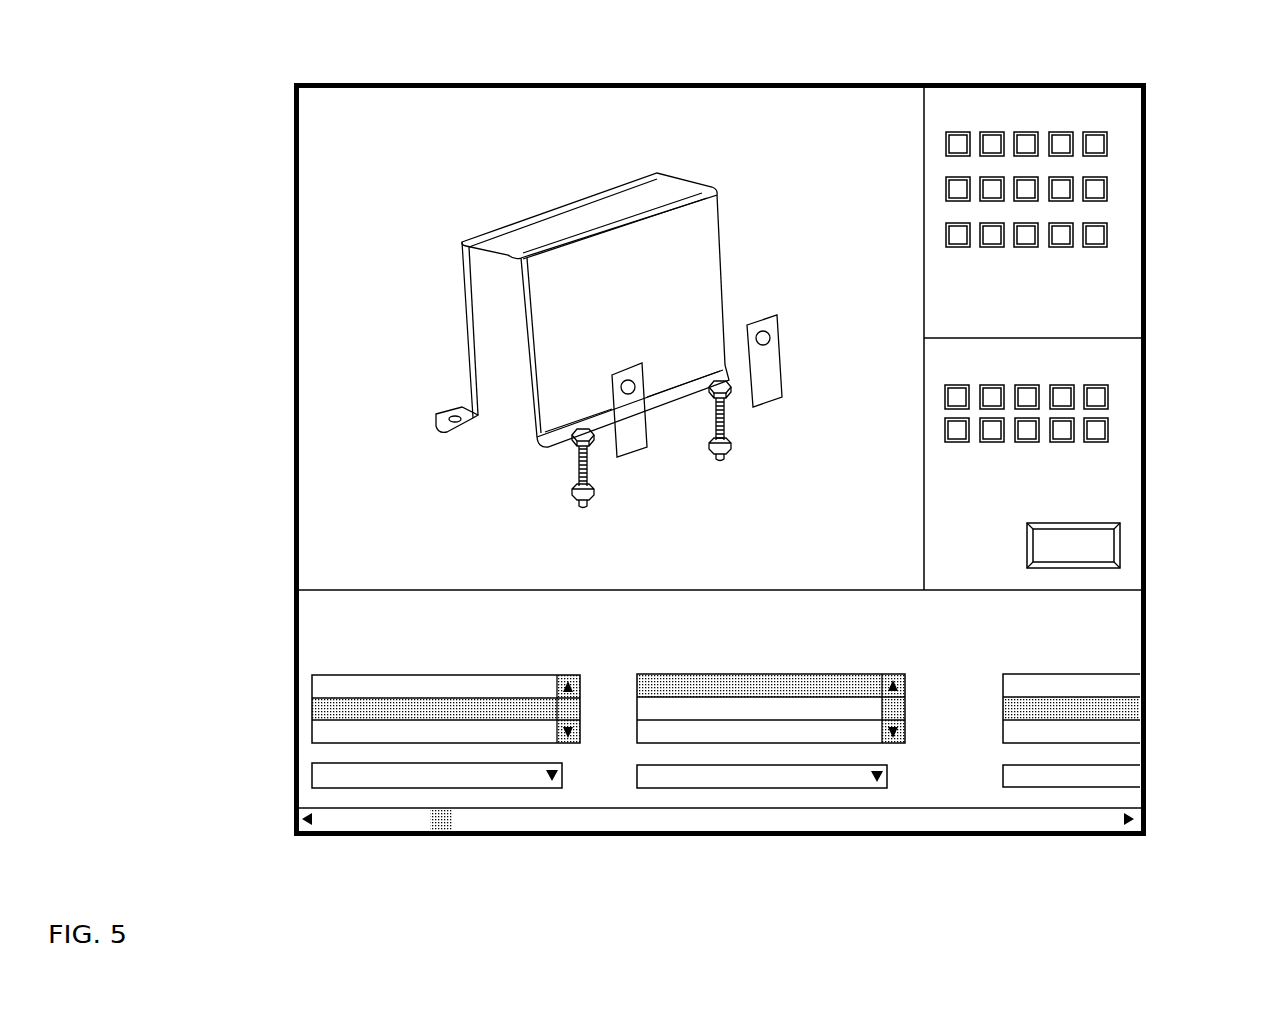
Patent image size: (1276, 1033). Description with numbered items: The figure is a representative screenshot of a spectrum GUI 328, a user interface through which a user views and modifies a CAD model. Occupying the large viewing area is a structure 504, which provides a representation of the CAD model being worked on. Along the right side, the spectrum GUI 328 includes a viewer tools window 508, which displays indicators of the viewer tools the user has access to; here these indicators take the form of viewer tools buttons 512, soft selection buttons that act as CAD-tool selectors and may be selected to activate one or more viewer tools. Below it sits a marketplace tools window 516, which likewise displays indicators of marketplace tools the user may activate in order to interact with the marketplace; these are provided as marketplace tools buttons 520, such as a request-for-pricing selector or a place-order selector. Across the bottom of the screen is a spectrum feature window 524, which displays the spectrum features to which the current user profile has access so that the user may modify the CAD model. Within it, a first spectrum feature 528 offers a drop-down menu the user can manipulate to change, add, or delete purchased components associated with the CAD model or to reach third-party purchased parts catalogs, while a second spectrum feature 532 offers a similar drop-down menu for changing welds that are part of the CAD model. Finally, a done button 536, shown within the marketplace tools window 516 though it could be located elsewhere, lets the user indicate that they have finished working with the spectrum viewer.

The spectrum GUI 328 is at (291, 70).
The structure 504 is at (535, 217).
The viewer tools window 508 is at (1132, 125).
The viewer tools buttons 512 is at (1121, 189).
The marketplace tools window 516 is at (1132, 373).
The marketplace tools buttons 520 is at (1121, 402).
The spectrum feature window 524 is at (307, 640).
The first spectrum feature 528 is at (580, 713).
The second spectrum feature 532 is at (905, 707).
The done button 536 is at (1117, 533).